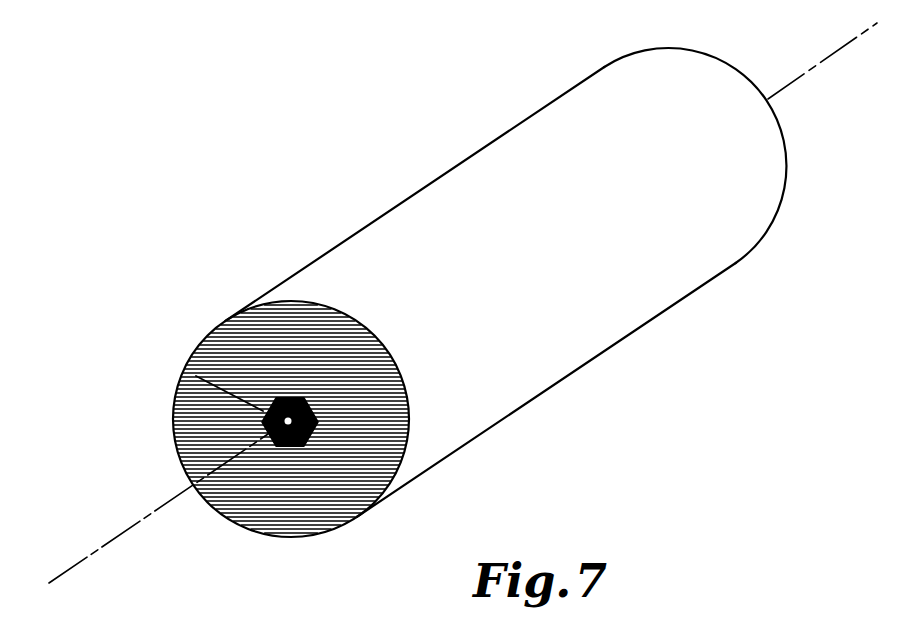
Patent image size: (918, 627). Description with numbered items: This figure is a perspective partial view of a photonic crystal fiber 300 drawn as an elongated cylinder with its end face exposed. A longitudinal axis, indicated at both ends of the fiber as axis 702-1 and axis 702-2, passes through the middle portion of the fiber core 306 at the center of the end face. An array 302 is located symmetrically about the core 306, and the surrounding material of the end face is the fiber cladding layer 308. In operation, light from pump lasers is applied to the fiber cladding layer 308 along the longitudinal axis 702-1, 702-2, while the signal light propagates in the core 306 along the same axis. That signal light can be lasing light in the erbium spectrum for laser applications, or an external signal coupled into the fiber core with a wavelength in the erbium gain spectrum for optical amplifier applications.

The photonic crystal fiber 300 is at (270, 190).
The array 302 is at (333, 402).
The fiber core 306 is at (193, 374).
The fiber cladding layer 308 is at (322, 490).
The longitudinal axis 702-1 is at (153, 512).
The longitudinal axis 702-2 is at (822, 62).